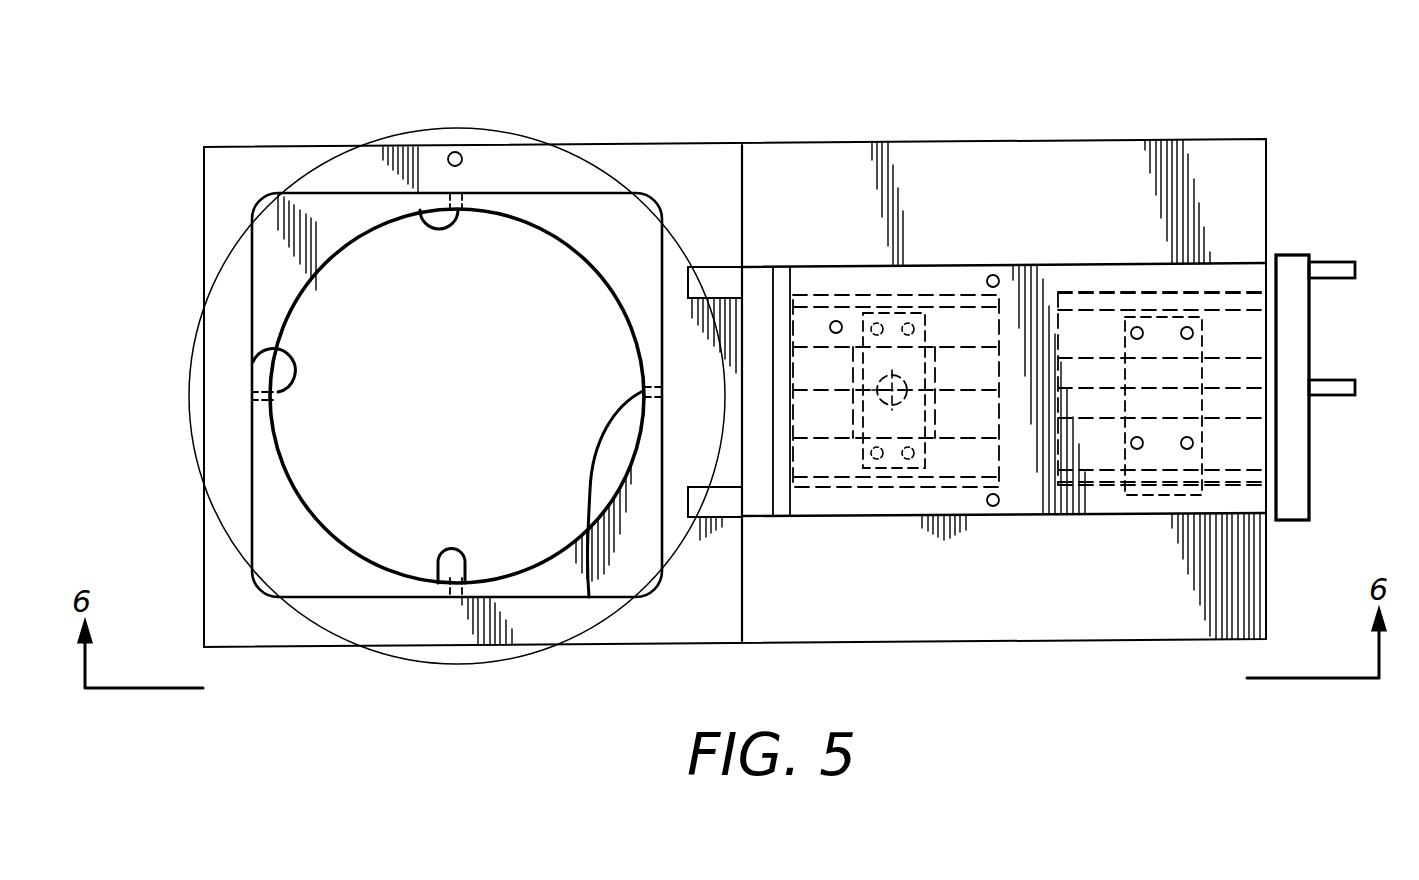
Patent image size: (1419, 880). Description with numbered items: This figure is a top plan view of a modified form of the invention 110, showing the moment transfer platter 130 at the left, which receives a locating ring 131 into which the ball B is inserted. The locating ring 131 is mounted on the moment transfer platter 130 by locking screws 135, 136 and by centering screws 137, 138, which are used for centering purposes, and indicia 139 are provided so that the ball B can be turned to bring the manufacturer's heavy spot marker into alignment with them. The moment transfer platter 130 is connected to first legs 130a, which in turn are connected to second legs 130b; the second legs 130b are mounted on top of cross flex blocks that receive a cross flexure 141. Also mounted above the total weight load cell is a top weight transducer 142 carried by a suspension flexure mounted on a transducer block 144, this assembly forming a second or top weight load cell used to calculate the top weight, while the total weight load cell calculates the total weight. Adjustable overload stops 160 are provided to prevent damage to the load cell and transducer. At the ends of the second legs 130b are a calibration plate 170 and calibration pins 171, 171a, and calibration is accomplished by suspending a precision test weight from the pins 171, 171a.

The tool assembly 110 is at (972, 128).
The moment transfer platter 130 is at (275, 638).
The first legs 130a is at (713, 267).
The second legs 130b is at (843, 270).
The locating ring 131 is at (339, 578).
The locking screw 135 is at (256, 360).
The locking screw 136 is at (589, 597).
The centering screw 137 is at (428, 222).
The centering screw 138 is at (438, 583).
The indicia 139 is at (456, 150).
The cross flexure 141 is at (886, 308).
The top weight transducer 142 is at (1160, 308).
The transducer block 144 is at (1237, 340).
The adjustable overload stop 160 is at (1293, 522).
The calibration plate 170 is at (1309, 358).
The calibration pin 171 is at (1333, 262).
The calibration pin 171a is at (1355, 388).
The ball B is at (217, 275).